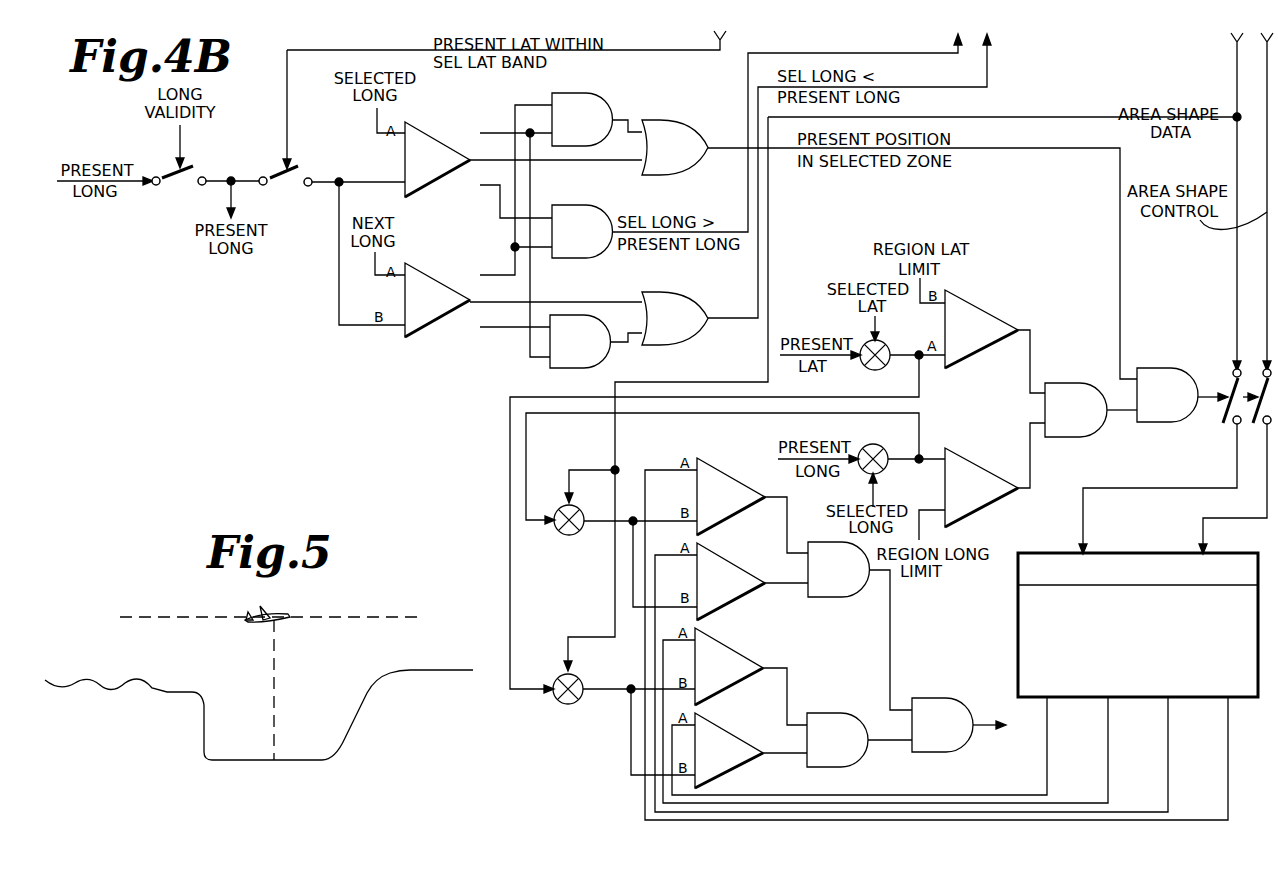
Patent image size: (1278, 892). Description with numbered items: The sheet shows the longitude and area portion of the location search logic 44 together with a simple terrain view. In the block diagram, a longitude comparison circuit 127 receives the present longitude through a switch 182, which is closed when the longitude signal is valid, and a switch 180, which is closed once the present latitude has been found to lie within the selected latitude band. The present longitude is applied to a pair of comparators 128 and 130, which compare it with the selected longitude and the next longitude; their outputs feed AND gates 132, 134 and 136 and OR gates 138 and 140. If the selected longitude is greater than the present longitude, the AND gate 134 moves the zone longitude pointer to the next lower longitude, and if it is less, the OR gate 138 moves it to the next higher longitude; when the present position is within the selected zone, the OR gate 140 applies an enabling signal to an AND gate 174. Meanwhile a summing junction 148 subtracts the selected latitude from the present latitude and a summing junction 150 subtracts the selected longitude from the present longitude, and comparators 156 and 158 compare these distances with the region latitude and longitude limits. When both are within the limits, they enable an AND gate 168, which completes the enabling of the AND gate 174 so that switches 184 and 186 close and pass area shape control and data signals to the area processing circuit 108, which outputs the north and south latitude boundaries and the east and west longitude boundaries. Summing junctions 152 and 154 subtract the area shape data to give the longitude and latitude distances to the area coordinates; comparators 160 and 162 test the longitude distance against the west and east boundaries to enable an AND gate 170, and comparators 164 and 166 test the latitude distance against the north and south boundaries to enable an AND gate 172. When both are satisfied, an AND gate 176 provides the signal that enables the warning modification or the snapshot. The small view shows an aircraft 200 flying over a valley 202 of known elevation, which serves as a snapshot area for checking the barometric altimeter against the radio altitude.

In FIG. 4B, the location search logic 44 is at (596, 755).
In FIG. 4B, the area processing circuit 108 is at (1153, 556).
In FIG. 4B, the longitude comparison circuit 127 is at (284, 286).
In FIG. 4B, the comparator 128 is at (421, 126).
In FIG. 4B, the comparator 130 is at (415, 272).
In FIG. 4B, the AND gate 132 is at (593, 110).
In FIG. 4B, the AND gate 134 is at (583, 215).
In FIG. 4B, the AND gate 136 is at (603, 350).
In FIG. 4B, the OR gate 138 is at (697, 300).
In FIG. 4B, the OR gate 140 is at (690, 135).
In FIG. 4B, the summing junction 148 is at (866, 342).
In FIG. 4B, the summing junction 150 is at (861, 472).
In FIG. 4B, the summing junction 152 is at (583, 532).
In FIG. 4B, the summing junction 154 is at (572, 705).
In FIG. 4B, the comparator 156 is at (979, 312).
In FIG. 4B, the comparator 158 is at (970, 467).
In FIG. 4B, the comparator 160 is at (728, 477).
In FIG. 4B, the comparator 162 is at (732, 572).
In FIG. 4B, the comparator 164 is at (729, 661).
In FIG. 4B, the comparator 166 is at (733, 745).
In FIG. 4B, the AND gate 168 is at (1075, 385).
In FIG. 4B, the AND gate 170 is at (832, 598).
In FIG. 4B, the AND gate 172 is at (834, 722).
In FIG. 4B, the AND gate 174 is at (1167, 375).
In FIG. 4B, the AND gate 176 is at (950, 712).
In FIG. 4B, the switch 180 is at (286, 163).
In FIG. 4B, the switch 182 is at (173, 166).
In FIG. 4B, the switch 184 is at (1221, 409).
In FIG. 4B, the switch 186 is at (1252, 414).
In FIG. 5, the aircraft 200 is at (288, 615).
In FIG. 5, the valley 202 is at (292, 758).